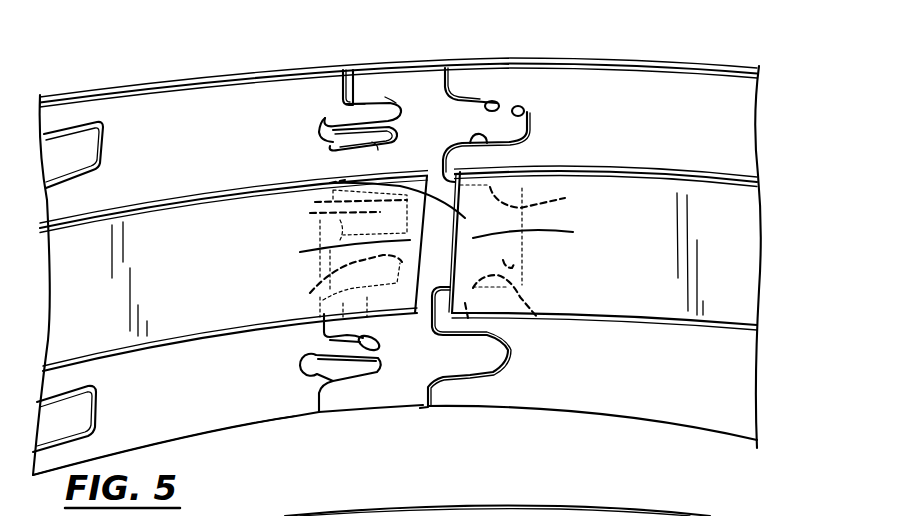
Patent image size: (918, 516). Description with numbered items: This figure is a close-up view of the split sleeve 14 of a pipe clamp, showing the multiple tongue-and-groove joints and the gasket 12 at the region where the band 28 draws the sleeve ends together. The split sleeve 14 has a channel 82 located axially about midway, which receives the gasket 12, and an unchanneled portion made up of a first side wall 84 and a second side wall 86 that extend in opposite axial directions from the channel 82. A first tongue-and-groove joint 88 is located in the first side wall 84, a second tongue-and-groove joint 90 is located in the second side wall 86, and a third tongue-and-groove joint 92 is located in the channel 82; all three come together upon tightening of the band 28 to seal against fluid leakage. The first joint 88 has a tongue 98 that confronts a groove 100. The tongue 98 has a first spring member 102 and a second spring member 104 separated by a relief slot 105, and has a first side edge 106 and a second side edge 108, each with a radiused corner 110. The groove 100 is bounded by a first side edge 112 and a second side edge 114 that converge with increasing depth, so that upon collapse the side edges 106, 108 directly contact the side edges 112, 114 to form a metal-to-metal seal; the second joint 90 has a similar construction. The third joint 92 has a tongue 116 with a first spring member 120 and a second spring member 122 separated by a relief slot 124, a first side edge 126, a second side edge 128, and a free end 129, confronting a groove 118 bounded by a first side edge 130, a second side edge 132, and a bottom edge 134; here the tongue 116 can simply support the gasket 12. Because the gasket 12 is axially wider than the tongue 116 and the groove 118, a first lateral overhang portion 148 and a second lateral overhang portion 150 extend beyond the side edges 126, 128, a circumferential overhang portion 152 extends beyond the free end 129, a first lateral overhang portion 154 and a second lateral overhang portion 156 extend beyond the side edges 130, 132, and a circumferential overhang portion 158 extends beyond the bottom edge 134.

The gasket 12 is at (121, 365).
The split sleeve 14 is at (170, 440).
The band 28 is at (412, 52).
The channel 82 is at (727, 217).
The first side wall 84 is at (698, 95).
The second side wall 86 is at (660, 395).
The first tongue-and-groove joint 88 is at (480, 92).
The second tongue-and-groove joint 90 is at (505, 330).
The third tongue-and-groove joint 92 is at (603, 163).
The tongue 98 is at (392, 108).
The groove 100 is at (518, 107).
The first spring member 102 is at (362, 108).
The second spring member 104 is at (352, 144).
The relief slot 105 is at (325, 118).
The first side edge 106 is at (385, 97).
The second side edge 108 is at (378, 148).
The radiused corner 110 is at (350, 100).
The first side edge 112 is at (500, 107).
The second side edge 114 is at (487, 143).
The tongue 116 is at (312, 222).
The groove 118 is at (522, 249).
The first spring member 120 is at (330, 204).
The second spring member 122 is at (322, 284).
The relief slot 124 is at (285, 276).
The first side edge 126 is at (374, 312).
The second side edge 128 is at (327, 179).
The free end 129 is at (488, 263).
The first side edge 130 is at (524, 207).
The second side edge 132 is at (537, 317).
The bottom edge 134 is at (522, 277).
The first lateral overhang portion 148 is at (416, 206).
The second lateral overhang portion 150 is at (346, 307).
The circumferential overhang portion 152 is at (302, 252).
The first lateral overhang portion 154 is at (520, 188).
The second lateral overhang portion 156 is at (470, 300).
The circumferential overhang portion 158 is at (542, 237).